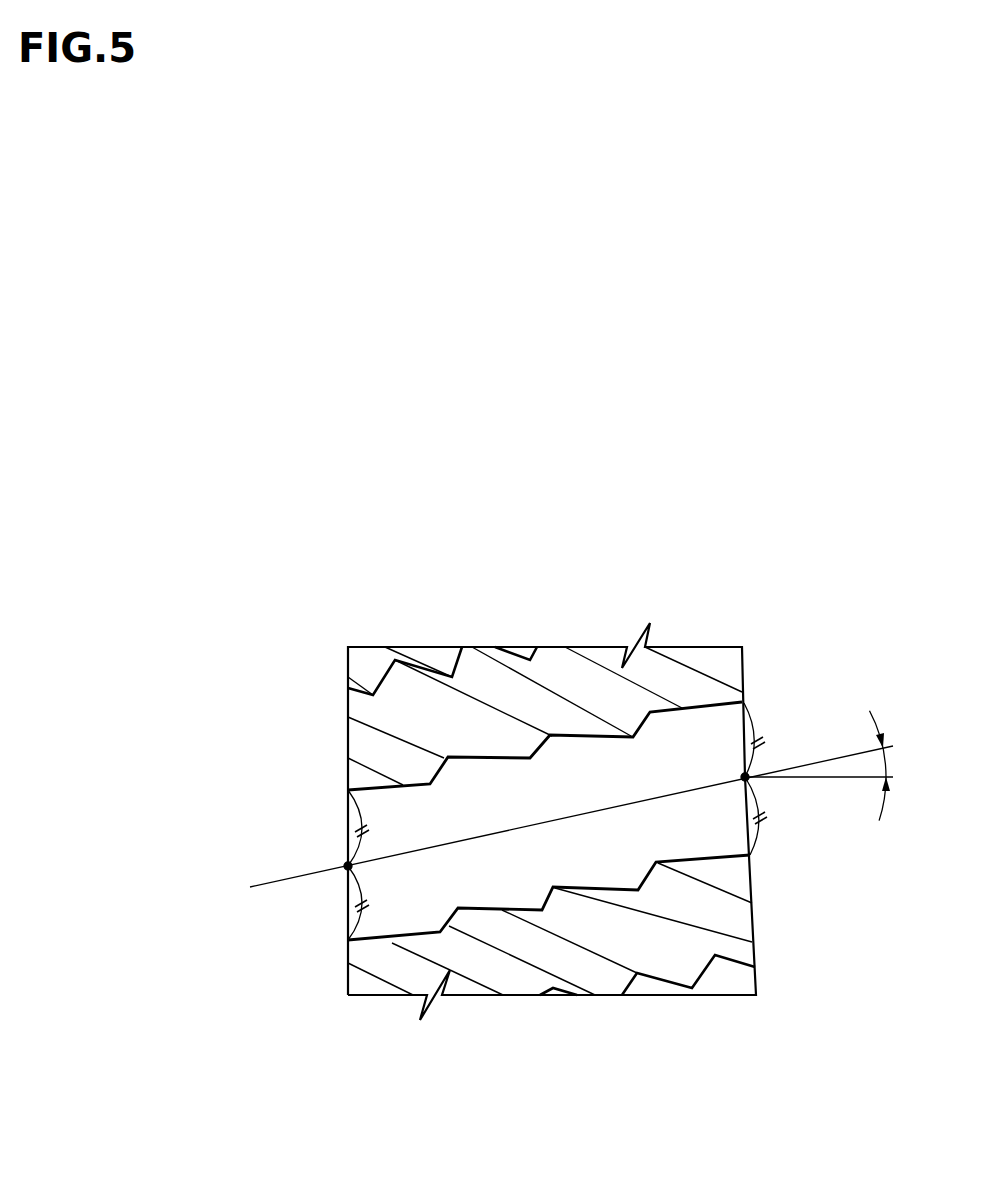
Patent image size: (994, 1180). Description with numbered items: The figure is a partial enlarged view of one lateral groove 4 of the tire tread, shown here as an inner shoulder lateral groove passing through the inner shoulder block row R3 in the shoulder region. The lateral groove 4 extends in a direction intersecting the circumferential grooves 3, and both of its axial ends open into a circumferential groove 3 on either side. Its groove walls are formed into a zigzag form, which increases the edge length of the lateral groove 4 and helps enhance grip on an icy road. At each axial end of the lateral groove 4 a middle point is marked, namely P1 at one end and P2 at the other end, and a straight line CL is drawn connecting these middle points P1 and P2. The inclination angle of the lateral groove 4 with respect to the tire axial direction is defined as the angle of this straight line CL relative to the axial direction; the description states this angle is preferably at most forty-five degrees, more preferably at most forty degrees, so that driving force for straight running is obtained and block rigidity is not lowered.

The circumferential groove 3 is at (325, 651).
The lateral groove 4 is at (465, 797).
The inner shoulder block row R3 is at (563, 618).
The middle point of axial end of lateral groove P1 is at (348, 866).
The middle point of axial end of lateral groove P2 is at (745, 777).
The straight line CL is at (283, 882).